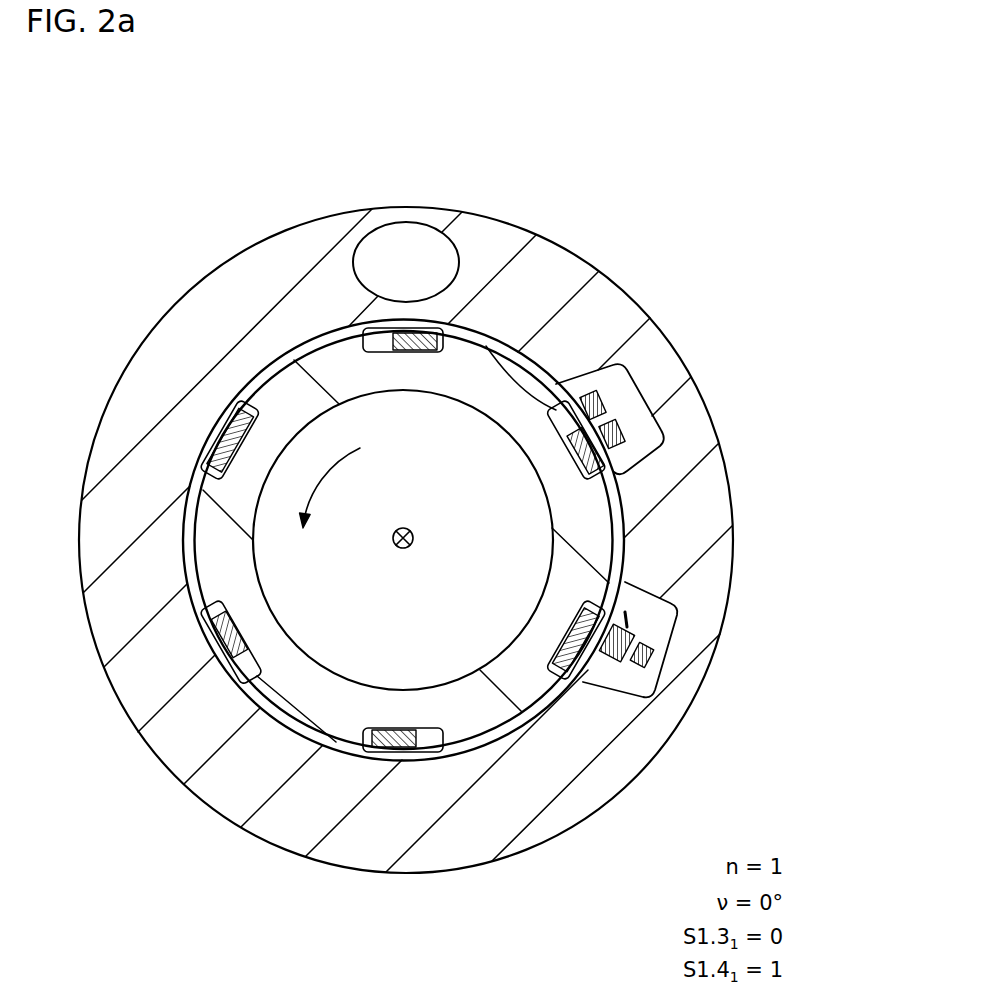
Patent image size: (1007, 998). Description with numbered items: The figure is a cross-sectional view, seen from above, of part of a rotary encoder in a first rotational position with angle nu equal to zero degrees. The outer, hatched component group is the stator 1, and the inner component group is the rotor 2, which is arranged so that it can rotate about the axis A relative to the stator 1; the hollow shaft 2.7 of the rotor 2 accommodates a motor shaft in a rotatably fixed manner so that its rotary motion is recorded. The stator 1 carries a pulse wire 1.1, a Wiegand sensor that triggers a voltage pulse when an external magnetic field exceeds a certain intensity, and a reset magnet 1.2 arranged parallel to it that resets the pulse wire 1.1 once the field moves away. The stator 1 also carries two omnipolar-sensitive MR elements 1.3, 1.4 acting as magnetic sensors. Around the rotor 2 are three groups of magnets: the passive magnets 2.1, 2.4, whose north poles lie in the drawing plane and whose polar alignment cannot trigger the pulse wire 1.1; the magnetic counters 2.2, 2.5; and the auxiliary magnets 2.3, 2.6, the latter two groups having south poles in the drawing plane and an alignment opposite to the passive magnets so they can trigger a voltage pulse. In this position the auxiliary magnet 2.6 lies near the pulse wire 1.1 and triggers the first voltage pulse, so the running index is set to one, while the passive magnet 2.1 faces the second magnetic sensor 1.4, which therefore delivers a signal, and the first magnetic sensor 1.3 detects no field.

The stator 1 is at (207, 359).
The pulse wire 1.1 is at (630, 630).
The reset magnet 1.2 is at (653, 660).
The MR element 1.3 is at (603, 398).
The MR element 1.4 is at (622, 440).
The rotor 2 is at (531, 483).
The passive magnet 2.1 is at (566, 454).
The magnetic counter 2.2 is at (418, 350).
The auxiliary magnet 2.3 is at (242, 462).
The passive magnet 2.4 is at (233, 622).
The magnetic counter 2.5 is at (417, 730).
The auxiliary magnet 2.6 is at (562, 646).
The hollow shaft 2.7 is at (283, 635).
The axis A is at (394, 545).